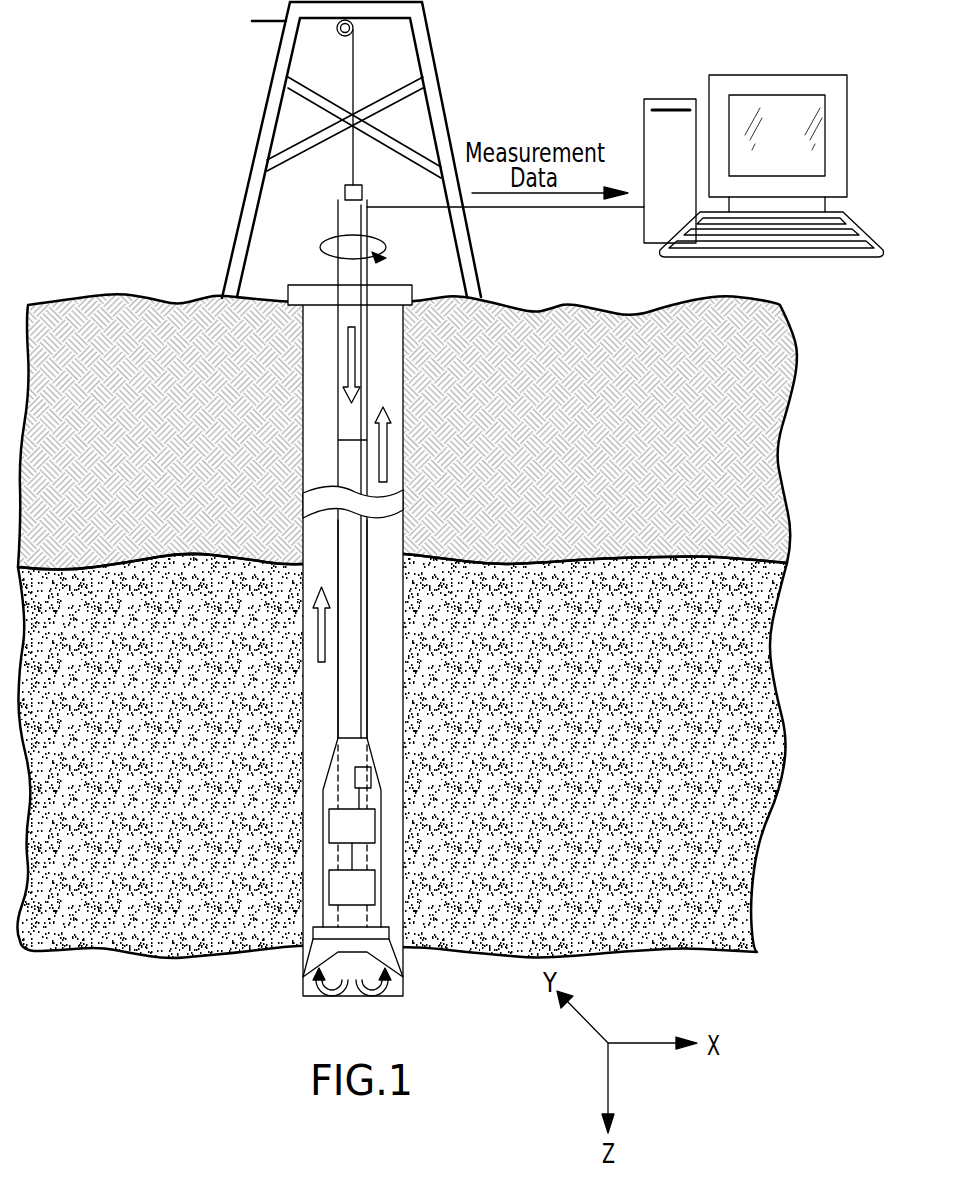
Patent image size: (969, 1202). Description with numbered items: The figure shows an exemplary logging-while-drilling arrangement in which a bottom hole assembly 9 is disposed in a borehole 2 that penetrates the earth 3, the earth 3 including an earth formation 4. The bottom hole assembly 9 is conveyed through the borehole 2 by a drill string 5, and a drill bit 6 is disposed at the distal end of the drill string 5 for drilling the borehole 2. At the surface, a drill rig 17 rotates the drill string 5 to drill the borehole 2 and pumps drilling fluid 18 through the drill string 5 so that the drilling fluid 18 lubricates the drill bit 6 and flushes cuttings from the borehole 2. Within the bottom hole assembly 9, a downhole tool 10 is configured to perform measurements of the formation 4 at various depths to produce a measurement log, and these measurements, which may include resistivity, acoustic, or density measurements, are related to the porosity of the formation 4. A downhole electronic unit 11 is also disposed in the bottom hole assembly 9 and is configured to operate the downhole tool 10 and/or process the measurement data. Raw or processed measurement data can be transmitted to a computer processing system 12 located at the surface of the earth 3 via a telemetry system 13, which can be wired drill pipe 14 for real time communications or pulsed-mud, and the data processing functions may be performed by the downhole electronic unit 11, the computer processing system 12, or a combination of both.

The borehole 2 is at (312, 457).
The earth 3 is at (630, 381).
The earth formation 4 is at (656, 632).
The drill string 5 is at (336, 413).
The drill bit 6 is at (386, 953).
The bottom hole assembly 9 is at (329, 830).
The downhole tool 10 is at (364, 903).
The downhole electronic unit 11 is at (364, 842).
The computer processing system 12 is at (662, 103).
The telemetry system 13 is at (372, 778).
The wired drill pipe 14 is at (358, 703).
The drill rig 17 is at (200, 244).
The drilling fluid 18 is at (350, 357).